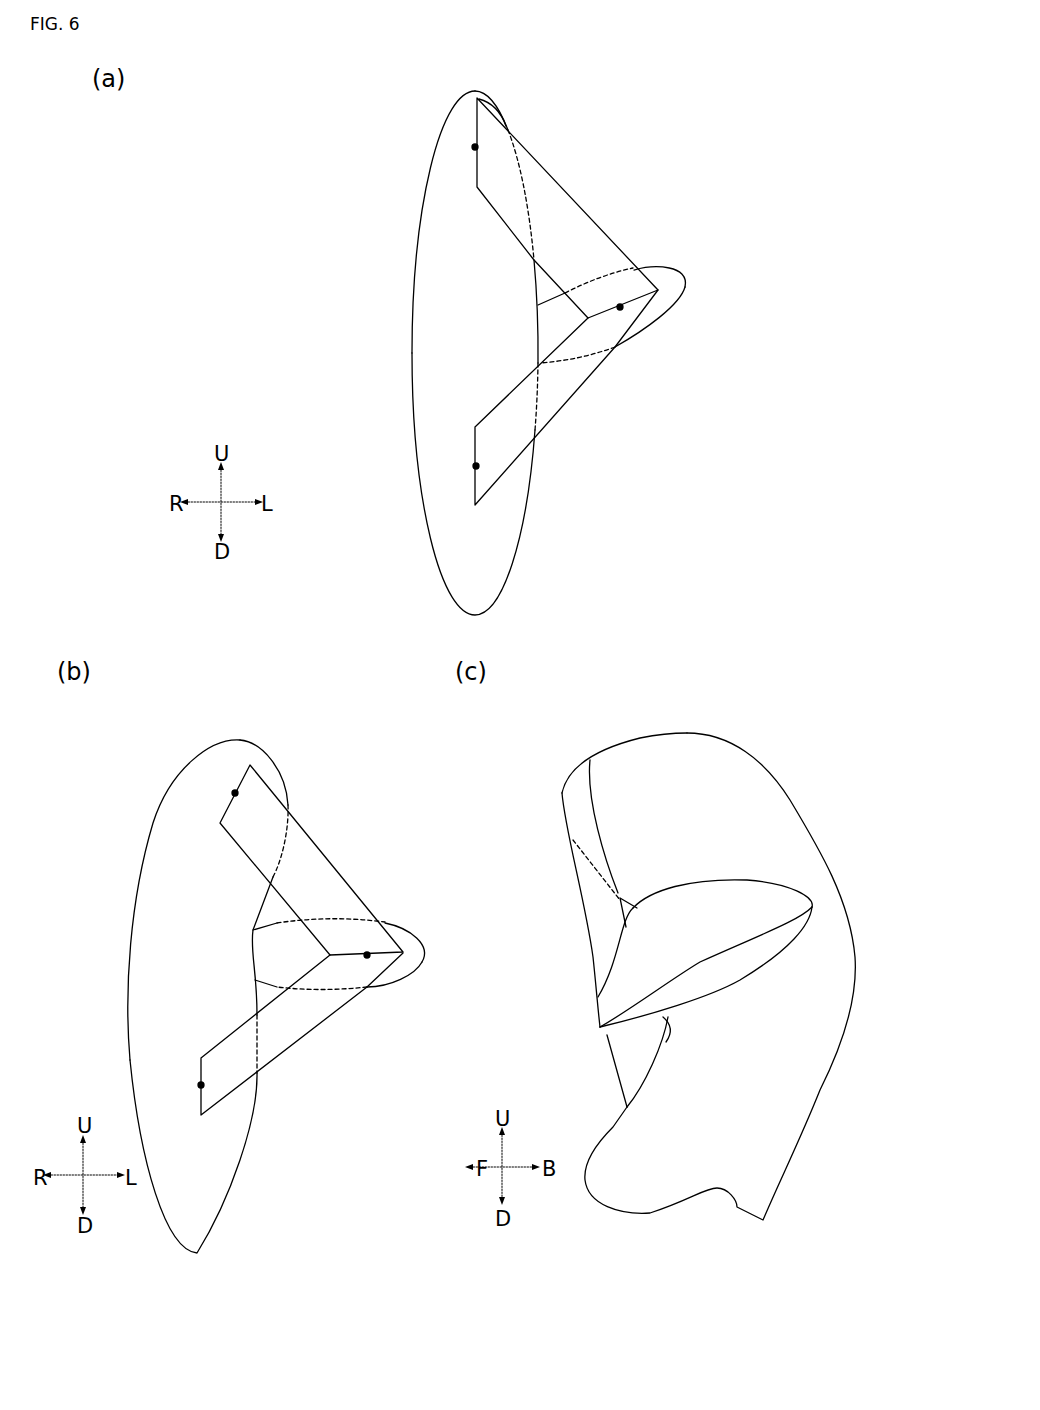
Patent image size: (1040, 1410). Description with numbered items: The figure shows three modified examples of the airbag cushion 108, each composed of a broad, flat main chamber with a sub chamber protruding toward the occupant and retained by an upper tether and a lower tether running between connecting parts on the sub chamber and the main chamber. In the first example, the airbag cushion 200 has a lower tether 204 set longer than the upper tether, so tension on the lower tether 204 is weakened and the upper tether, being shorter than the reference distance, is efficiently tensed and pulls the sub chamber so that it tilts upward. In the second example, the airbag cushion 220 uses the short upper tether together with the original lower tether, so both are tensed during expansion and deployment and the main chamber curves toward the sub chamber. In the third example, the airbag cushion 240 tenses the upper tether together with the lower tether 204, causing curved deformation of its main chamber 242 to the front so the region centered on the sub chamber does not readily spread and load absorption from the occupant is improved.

The airbag cushion 200 is at (361, 123).
The airbag cushion 220 is at (210, 731).
The airbag cushion 240 is at (597, 732).
The airbag cushion 108 is at (191, 996).
The lower tether 204 is at (566, 401).
The main chamber 242 is at (697, 745).